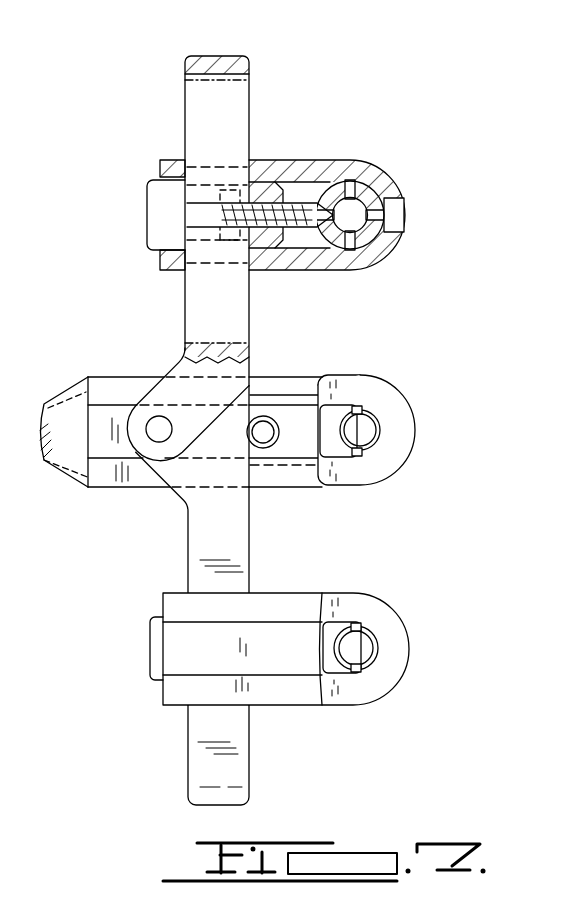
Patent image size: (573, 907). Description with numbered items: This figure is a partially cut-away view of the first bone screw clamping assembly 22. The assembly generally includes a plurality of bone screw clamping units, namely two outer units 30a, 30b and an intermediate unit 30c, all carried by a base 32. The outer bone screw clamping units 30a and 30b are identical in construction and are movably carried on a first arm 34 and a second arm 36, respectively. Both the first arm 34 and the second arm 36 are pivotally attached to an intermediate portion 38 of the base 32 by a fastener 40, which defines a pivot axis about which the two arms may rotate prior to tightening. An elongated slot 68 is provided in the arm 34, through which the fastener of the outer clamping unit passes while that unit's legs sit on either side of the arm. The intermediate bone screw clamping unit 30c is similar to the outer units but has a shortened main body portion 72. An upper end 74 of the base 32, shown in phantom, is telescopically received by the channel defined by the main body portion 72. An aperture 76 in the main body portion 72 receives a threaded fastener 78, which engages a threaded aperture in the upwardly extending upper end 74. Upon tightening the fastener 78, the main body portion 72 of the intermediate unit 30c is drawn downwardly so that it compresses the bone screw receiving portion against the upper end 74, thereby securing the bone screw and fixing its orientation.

The bone screw clamping assembly 22 is at (292, 90).
The first arm 34 is at (178, 112).
The outer bone screw clamping unit 30a is at (401, 173).
The base 32 is at (109, 372).
The fastener 40 is at (157, 428).
The threaded fastener 78 is at (264, 430).
The upper end 74 is at (284, 372).
The main body portion 72 is at (375, 370).
The intermediate bone screw clamping unit 30c is at (421, 403).
The intermediate portion 38 is at (103, 490).
The aperture 76 is at (279, 448).
The elongated slot 68 is at (207, 520).
The outer bone screw clamping unit 30b is at (395, 603).
The second arm 36 is at (256, 770).